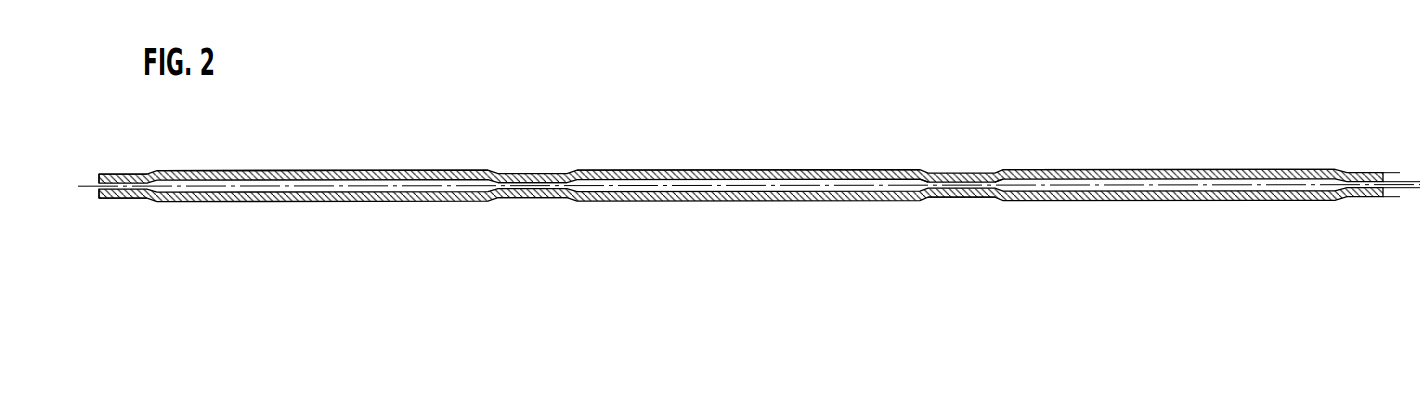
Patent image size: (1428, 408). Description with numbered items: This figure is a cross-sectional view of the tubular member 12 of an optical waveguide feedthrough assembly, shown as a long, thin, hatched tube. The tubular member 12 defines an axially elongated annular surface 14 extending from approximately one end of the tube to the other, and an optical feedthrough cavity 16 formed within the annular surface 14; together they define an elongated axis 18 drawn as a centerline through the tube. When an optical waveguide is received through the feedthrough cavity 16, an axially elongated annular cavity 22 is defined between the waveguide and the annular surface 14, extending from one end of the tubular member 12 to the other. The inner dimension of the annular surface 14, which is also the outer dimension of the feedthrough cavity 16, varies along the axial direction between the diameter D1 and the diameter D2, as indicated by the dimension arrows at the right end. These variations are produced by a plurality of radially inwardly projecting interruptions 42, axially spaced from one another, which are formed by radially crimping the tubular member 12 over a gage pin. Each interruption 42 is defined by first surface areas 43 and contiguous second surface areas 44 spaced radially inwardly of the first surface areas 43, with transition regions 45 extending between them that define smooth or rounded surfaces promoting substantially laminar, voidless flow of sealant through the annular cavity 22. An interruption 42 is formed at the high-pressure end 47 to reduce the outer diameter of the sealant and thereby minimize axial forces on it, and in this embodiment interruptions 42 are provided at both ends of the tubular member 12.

The tubular member 12 is at (735, 156).
The annular surface 14 is at (420, 175).
The optical feedthrough cavity 16 is at (1140, 183).
The elongated axis 18 is at (88, 172).
The annular cavity 22 is at (835, 183).
The radially inwardly projecting interruptions 42 is at (128, 180).
The first surface areas 43 is at (900, 180).
The second surface areas 44 is at (545, 187).
The transition regions 45 is at (490, 194).
The high-pressure end 47 is at (92, 199).
The diameter D2 is at (1392, 208).
The diameter D1 is at (1411, 203).